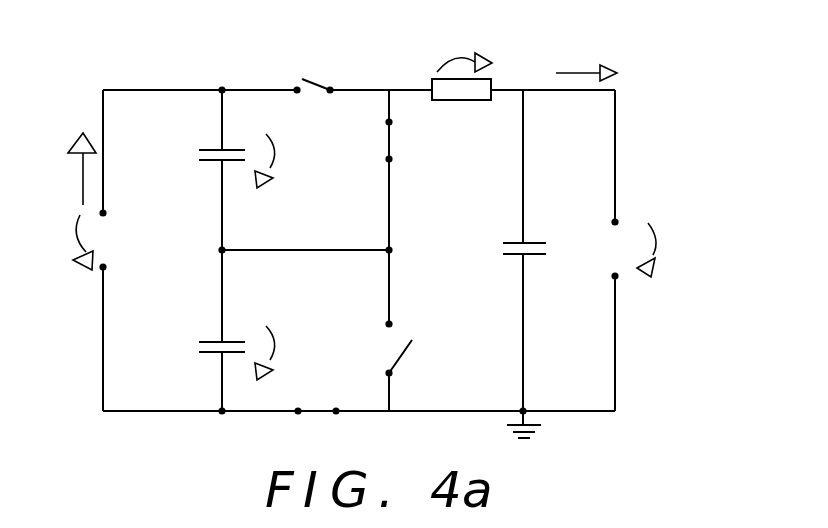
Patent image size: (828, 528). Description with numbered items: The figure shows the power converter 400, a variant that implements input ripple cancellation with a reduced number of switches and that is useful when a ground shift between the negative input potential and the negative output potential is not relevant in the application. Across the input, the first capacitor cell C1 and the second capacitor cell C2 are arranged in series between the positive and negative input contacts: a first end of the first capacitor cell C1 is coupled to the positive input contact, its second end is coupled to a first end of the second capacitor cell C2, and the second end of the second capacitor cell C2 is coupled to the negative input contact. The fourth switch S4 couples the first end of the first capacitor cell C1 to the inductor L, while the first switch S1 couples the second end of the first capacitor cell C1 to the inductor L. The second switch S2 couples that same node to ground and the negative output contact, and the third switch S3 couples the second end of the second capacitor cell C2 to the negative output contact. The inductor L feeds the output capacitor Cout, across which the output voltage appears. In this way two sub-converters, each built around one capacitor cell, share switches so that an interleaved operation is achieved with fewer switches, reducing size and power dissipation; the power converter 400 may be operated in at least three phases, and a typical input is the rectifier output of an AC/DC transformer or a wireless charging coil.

The power converter 400 is at (228, 58).
The first switch S1 is at (371, 170).
The second switch S2 is at (380, 330).
The third switch S3 is at (317, 398).
The fourth switch S4 is at (313, 72).
The first capacitor cell C1 is at (213, 170).
The second capacitor cell C2 is at (213, 330).
The inductor L is at (461, 106).
The output capacitor Cout is at (536, 250).